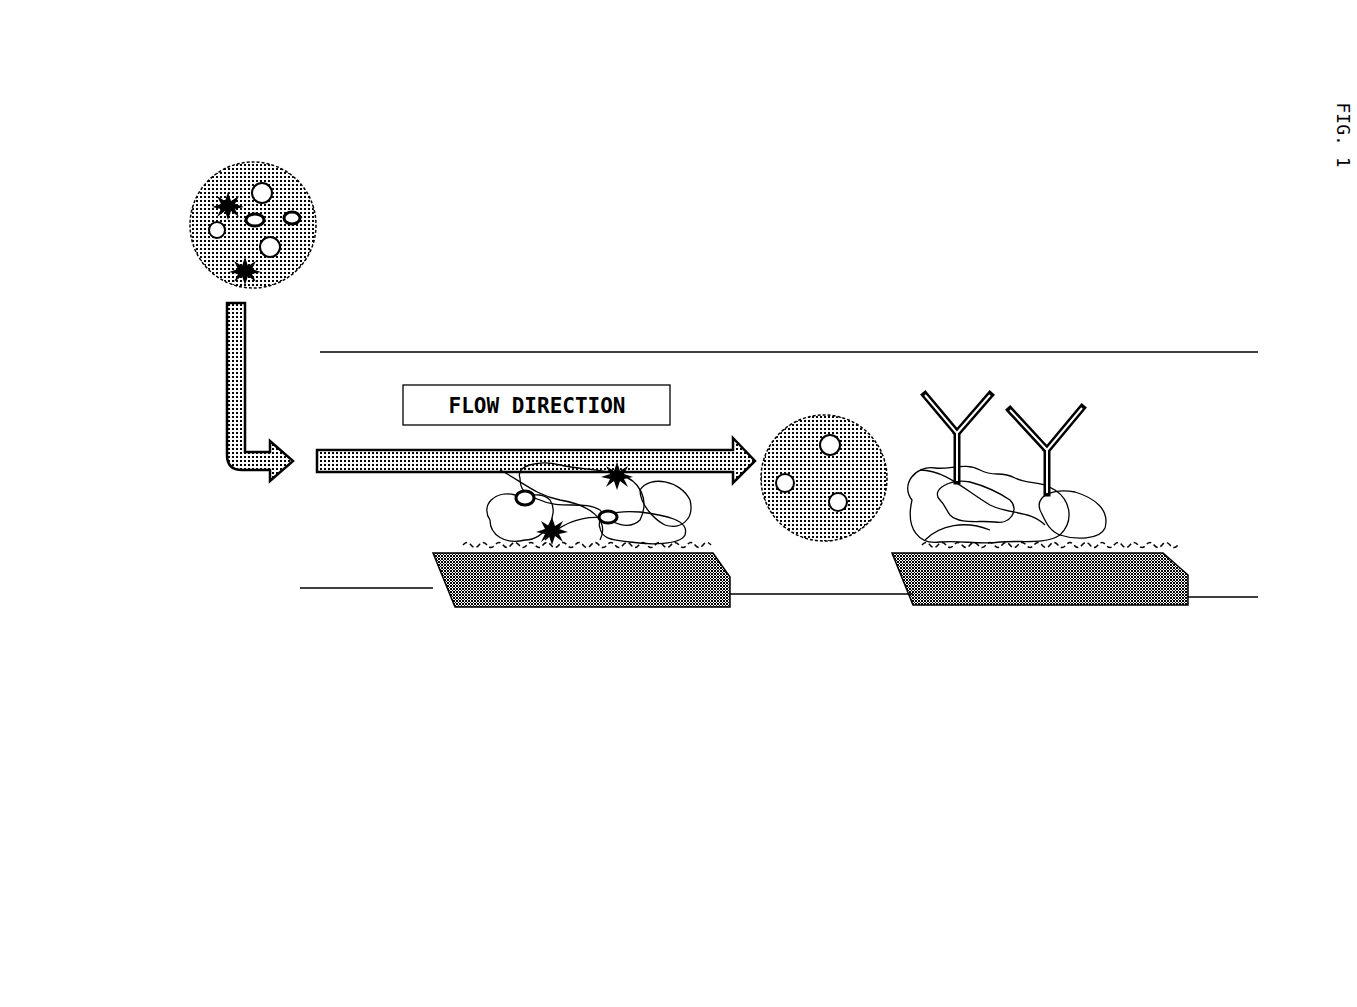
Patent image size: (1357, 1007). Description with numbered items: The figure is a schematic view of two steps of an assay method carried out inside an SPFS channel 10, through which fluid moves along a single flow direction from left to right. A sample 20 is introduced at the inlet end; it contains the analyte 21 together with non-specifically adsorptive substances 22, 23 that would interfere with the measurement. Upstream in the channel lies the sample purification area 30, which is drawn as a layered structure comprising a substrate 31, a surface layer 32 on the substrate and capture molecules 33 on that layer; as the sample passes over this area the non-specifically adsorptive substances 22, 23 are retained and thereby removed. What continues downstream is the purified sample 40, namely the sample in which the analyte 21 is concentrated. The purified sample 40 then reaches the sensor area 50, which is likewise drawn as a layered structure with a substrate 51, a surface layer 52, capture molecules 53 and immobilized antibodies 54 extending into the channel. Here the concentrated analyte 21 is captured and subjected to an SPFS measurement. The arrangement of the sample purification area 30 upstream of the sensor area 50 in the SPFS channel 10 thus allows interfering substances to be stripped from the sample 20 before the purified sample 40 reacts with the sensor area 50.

The SPFS channel 10 is at (1150, 385).
The sample 20 is at (309, 186).
The analyte 21 is at (263, 178).
The non-specifically adsorptive substance 22 is at (216, 196).
The non-specifically adsorptive substance 23 is at (303, 220).
The sample purification area 30 is at (531, 611).
The substrate 31 is at (441, 588).
The linker layer 32 is at (453, 547).
The capture molecules 33 is at (479, 506).
The purified sample 40 is at (828, 425).
The sensor area 50 is at (1090, 577).
The detection substrate 51 is at (1185, 581).
The detection linker layer 52 is at (1178, 544).
The detection molecules 53 is at (1077, 469).
The antibodies 54 is at (1088, 425).